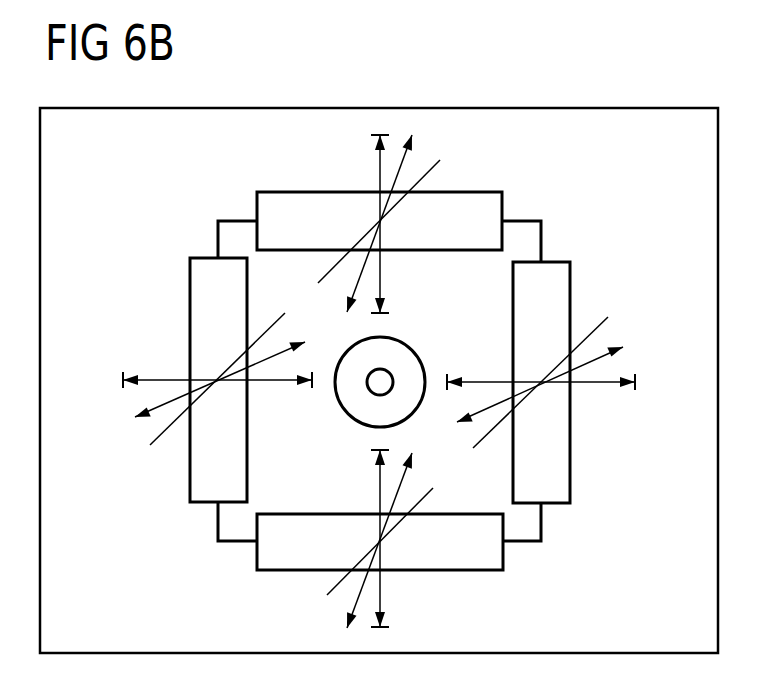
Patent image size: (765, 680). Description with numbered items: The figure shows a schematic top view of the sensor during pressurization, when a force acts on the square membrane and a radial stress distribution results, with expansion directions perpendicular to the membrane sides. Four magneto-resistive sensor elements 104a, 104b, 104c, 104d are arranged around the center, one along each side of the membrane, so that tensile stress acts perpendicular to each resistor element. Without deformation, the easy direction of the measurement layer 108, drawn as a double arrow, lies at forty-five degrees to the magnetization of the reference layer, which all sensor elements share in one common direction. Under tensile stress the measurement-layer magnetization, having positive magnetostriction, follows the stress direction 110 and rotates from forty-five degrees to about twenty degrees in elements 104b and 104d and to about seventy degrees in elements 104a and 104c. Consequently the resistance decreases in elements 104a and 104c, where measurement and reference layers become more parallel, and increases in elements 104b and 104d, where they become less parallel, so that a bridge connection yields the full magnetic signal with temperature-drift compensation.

The sensor element 104a is at (288, 192).
The sensor element 104b is at (190, 288).
The sensor element 104c is at (305, 513).
The sensor element 104d is at (571, 482).
The easy direction of the measurement layer 108 is at (408, 148).
The displacement direction arrow 110 is at (382, 270).